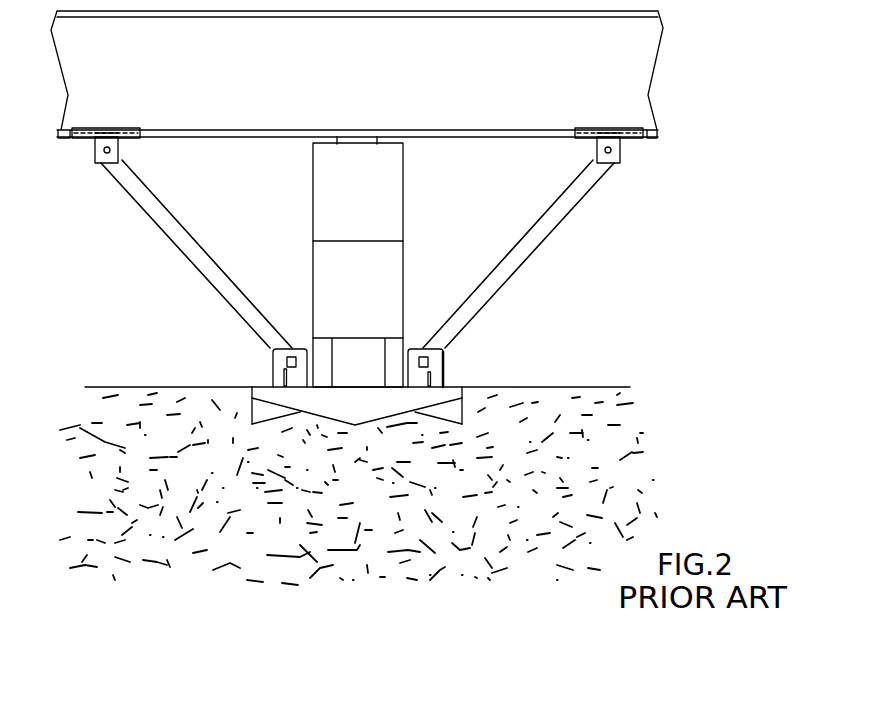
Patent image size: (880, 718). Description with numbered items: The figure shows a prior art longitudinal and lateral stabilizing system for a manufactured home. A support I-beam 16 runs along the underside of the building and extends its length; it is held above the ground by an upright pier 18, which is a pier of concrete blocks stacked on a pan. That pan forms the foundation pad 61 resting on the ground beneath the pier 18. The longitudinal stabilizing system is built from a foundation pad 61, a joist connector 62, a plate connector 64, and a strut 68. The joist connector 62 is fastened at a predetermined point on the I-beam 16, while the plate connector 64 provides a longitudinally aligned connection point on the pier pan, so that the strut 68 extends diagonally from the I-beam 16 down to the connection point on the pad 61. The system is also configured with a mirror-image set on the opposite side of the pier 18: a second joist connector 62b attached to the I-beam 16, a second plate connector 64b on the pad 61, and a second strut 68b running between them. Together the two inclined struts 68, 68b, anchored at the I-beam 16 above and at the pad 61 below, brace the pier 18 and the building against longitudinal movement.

The support I-beam 16 is at (426, 94).
The upright pier 18 is at (407, 201).
The joist connector 62 is at (606, 124).
The second joist connector 62b is at (124, 124).
The plate connector 64 is at (448, 369).
The second plate connector 64b is at (270, 367).
The strut 68 is at (566, 226).
The second strut 68b is at (166, 238).
The foundation pad 61 is at (465, 407).